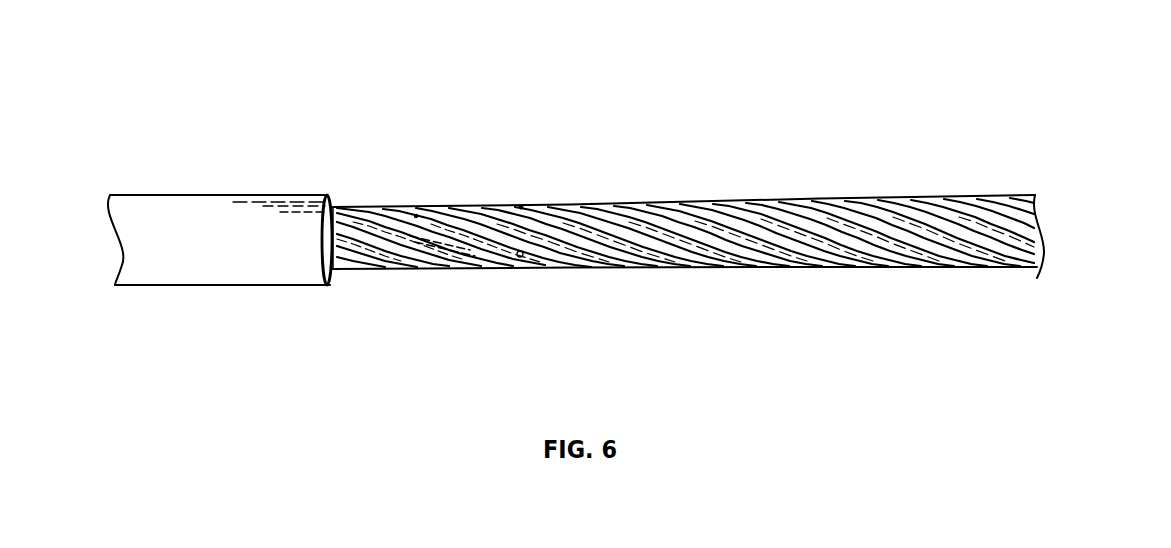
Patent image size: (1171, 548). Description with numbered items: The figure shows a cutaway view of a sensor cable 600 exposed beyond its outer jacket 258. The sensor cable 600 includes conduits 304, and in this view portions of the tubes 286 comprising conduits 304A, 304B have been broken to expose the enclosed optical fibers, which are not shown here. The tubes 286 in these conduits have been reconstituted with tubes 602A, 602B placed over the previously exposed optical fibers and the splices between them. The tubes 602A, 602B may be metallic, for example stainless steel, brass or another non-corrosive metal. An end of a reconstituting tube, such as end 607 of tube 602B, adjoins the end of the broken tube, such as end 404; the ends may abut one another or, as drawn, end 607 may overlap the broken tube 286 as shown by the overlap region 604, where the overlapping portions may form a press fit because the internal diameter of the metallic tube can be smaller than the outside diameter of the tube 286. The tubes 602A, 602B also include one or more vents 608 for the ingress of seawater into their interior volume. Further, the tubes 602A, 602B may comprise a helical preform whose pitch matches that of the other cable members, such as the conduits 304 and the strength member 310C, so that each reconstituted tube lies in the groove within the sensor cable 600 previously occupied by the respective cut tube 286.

The sensor cable 600 is at (1021, 86).
The outer jacket 258 is at (193, 210).
The strength member 310C is at (453, 230).
The conduits 304 is at (692, 201).
The conduit 304A is at (484, 203).
The conduit 304B is at (381, 212).
The tube 286 is at (393, 226).
The tube 602A is at (603, 230).
The tube 602B is at (560, 260).
The overlap region 604 is at (438, 246).
The end 607 is at (415, 219).
The end 404 is at (447, 236).
The vent 608 is at (521, 206).